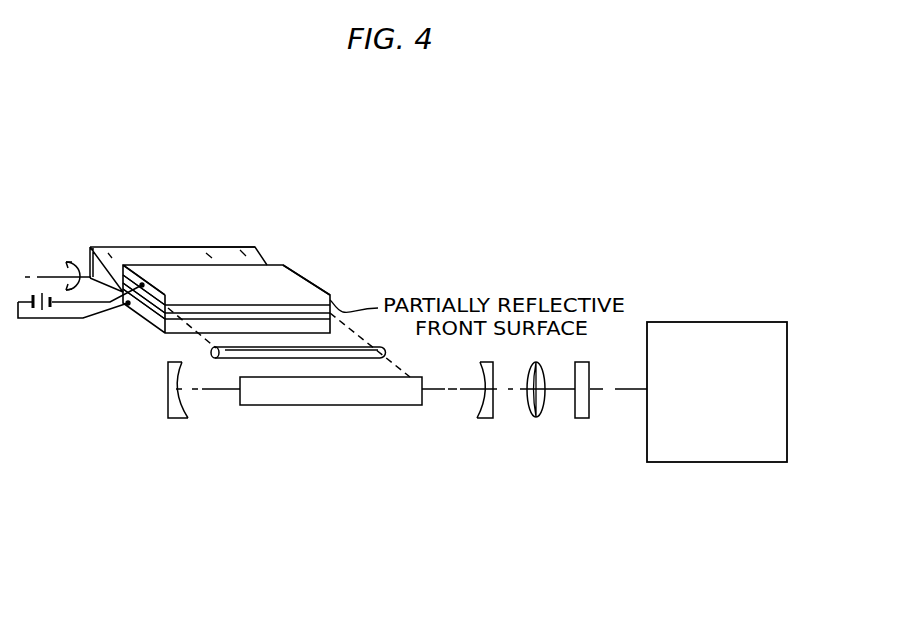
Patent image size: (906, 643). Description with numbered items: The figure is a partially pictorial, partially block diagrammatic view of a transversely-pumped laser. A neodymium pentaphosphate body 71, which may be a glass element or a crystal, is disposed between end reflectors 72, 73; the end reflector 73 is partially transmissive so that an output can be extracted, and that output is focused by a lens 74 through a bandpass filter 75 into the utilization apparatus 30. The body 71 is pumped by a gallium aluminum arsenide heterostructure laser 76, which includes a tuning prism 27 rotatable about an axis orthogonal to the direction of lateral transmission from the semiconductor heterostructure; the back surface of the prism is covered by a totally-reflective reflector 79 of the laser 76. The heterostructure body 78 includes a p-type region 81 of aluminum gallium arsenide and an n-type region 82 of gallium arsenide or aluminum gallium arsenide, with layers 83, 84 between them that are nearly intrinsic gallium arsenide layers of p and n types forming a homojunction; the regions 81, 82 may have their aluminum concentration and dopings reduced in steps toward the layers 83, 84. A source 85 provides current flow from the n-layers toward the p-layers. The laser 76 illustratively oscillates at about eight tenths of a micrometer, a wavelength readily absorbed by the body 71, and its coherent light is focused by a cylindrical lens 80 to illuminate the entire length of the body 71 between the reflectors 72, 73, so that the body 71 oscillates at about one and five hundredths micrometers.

The tuning prism 27 is at (171, 256).
The totally-reflective reflector 79 is at (230, 247).
The gallium aluminum arsenide heterostructure laser 76 is at (672, 209).
The heterostructure body 78 is at (334, 287).
The p-type region 81 is at (155, 292).
The n-type region 82 is at (155, 313).
The layer 83 is at (145, 302).
The layer 84 is at (140, 308).
The source 85 is at (30, 318).
The cylindrical lens 80 is at (208, 348).
The end reflector 72 is at (177, 420).
The neodymium pentaphosphate body 71 is at (342, 400).
The end reflector 73 is at (493, 420).
The lens 74 is at (540, 417).
The bandpass filter 75 is at (583, 420).
The utilization apparatus 30 is at (718, 463).